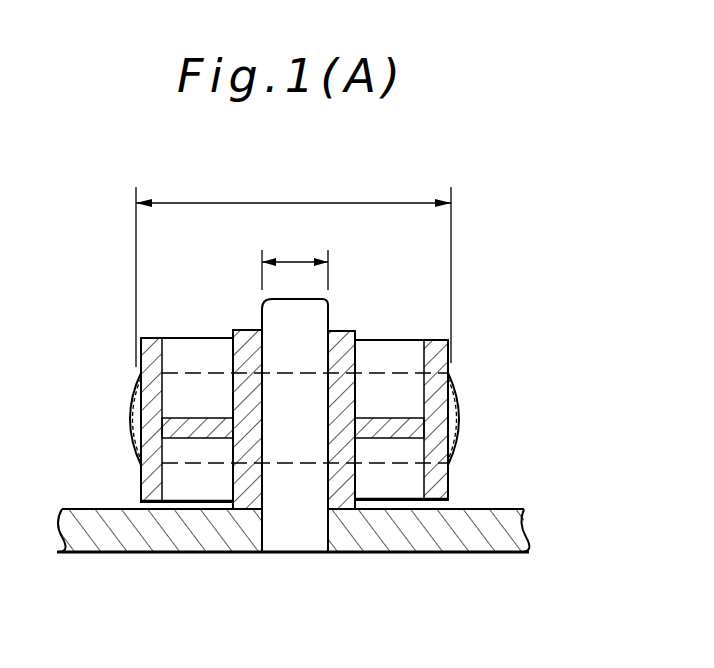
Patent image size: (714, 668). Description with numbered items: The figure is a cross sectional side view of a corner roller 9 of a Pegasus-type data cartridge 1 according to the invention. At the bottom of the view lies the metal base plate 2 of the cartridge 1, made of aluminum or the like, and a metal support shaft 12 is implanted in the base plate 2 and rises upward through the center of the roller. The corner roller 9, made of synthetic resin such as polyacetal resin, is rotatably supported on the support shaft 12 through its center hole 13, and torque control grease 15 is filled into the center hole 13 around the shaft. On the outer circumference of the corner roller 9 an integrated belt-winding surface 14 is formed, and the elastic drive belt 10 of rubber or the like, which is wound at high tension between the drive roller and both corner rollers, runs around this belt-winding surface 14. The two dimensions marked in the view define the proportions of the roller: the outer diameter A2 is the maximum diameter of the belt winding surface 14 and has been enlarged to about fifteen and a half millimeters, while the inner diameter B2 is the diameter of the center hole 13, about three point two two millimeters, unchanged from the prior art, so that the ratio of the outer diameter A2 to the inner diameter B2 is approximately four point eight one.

The cartridge 1 is at (474, 558).
The base plate 2 is at (410, 535).
The corner roller 9 is at (145, 352).
The drive belt 10 is at (457, 436).
The support shaft 12 is at (307, 317).
The center hole 13 is at (264, 449).
The belt-winding surface 14 is at (456, 390).
The torque control grease 15 is at (330, 487).
The outer diameter A2 is at (301, 201).
The inner diameter B2 is at (298, 260).